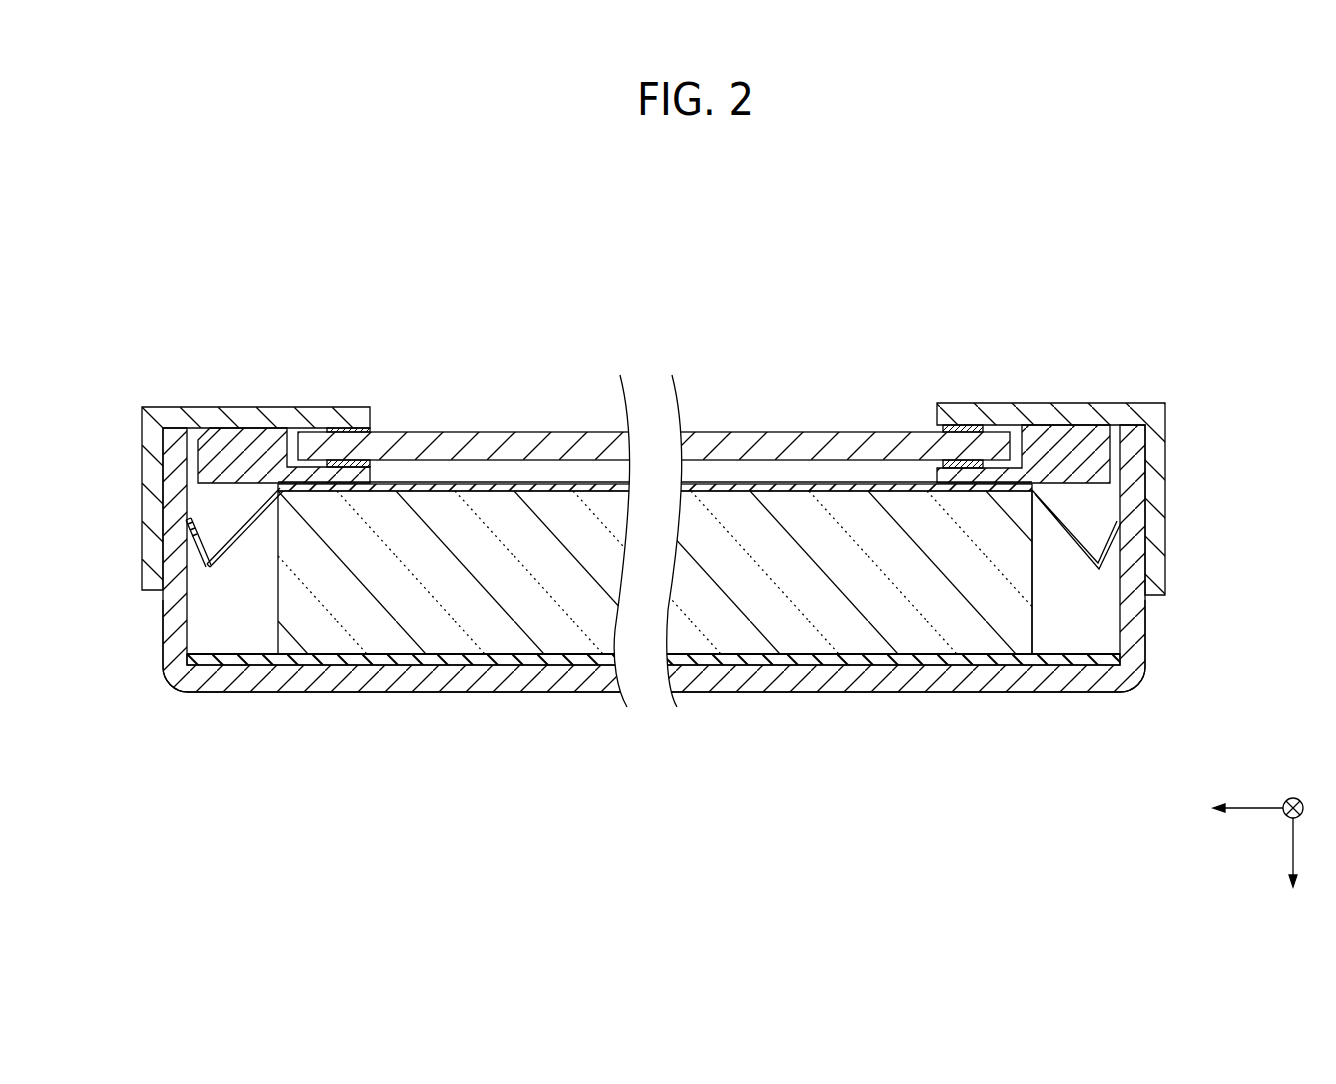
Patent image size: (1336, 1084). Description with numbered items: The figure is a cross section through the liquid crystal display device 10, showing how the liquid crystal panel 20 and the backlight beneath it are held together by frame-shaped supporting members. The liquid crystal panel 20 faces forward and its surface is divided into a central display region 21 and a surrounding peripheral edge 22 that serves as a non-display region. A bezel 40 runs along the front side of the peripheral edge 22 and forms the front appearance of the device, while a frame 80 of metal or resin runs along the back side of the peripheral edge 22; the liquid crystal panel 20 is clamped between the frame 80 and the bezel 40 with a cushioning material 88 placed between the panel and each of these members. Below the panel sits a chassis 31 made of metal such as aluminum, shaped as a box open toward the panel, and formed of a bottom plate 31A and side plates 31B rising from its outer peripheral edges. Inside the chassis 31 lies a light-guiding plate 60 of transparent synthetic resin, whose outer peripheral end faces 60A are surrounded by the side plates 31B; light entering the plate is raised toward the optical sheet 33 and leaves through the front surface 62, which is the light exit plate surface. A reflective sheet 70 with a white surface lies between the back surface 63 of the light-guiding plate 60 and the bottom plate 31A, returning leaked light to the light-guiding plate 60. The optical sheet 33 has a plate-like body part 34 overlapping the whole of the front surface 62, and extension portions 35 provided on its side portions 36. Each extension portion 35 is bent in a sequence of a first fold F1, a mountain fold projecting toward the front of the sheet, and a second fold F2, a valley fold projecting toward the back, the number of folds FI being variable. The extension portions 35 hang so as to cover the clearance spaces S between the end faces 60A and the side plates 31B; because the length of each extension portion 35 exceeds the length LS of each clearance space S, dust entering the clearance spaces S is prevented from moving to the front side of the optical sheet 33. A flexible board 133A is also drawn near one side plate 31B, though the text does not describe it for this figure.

The liquid crystal display device 10 is at (810, 186).
The liquid crystal panel 20 is at (770, 445).
The display region 21 is at (370, 308).
The peripheral edge 22 is at (1010, 425).
The chassis 31 is at (664, 615).
The bottom plate 31A is at (1063, 673).
The side plates 31B is at (1138, 620).
The optical sheet 33 is at (490, 486).
The body part 34 is at (438, 484).
The extension portions 35 is at (191, 540).
The side portions 36 is at (274, 488).
The bezel 40 is at (1052, 415).
The light-guiding plate 60 is at (842, 630).
The outer peripheral end faces 60A is at (1033, 582).
The front surface 62 is at (870, 535).
The back surface 63 is at (778, 664).
The reflective sheet 70 is at (580, 660).
The frame 80 is at (1077, 452).
The cushioning material 88 is at (370, 428).
The flexible board 133A is at (1119, 524).
The first fold F1 is at (270, 484).
The second fold F2 is at (208, 560).
The folds FI is at (147, 322).
The clearance spaces S is at (212, 602).
The length of clearance space LS is at (188, 700).